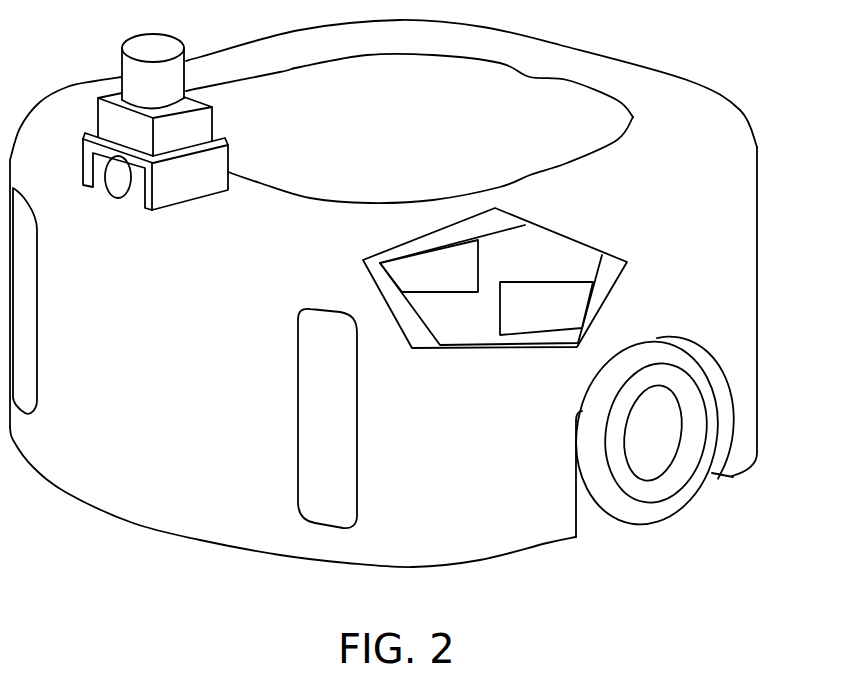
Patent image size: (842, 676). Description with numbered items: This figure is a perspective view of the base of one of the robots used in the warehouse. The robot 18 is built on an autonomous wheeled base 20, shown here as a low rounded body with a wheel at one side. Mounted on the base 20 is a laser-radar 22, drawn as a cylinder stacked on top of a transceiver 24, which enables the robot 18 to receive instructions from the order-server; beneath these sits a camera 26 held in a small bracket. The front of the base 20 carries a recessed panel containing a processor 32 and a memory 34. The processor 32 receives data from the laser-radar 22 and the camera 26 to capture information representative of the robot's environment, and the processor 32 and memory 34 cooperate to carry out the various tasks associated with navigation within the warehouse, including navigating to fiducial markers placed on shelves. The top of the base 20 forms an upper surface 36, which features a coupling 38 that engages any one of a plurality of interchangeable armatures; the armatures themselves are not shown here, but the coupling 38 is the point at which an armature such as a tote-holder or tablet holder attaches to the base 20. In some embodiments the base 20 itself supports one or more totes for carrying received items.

The robot 18 is at (758, 165).
The autonomous wheeled base 20 is at (194, 365).
The laser-radar 22 is at (168, 93).
The transceiver 24 is at (144, 138).
The camera 26 is at (82, 175).
The processor 32 is at (562, 321).
The memory 34 is at (442, 283).
The upper surface 36 is at (376, 155).
The coupling 38 is at (532, 175).